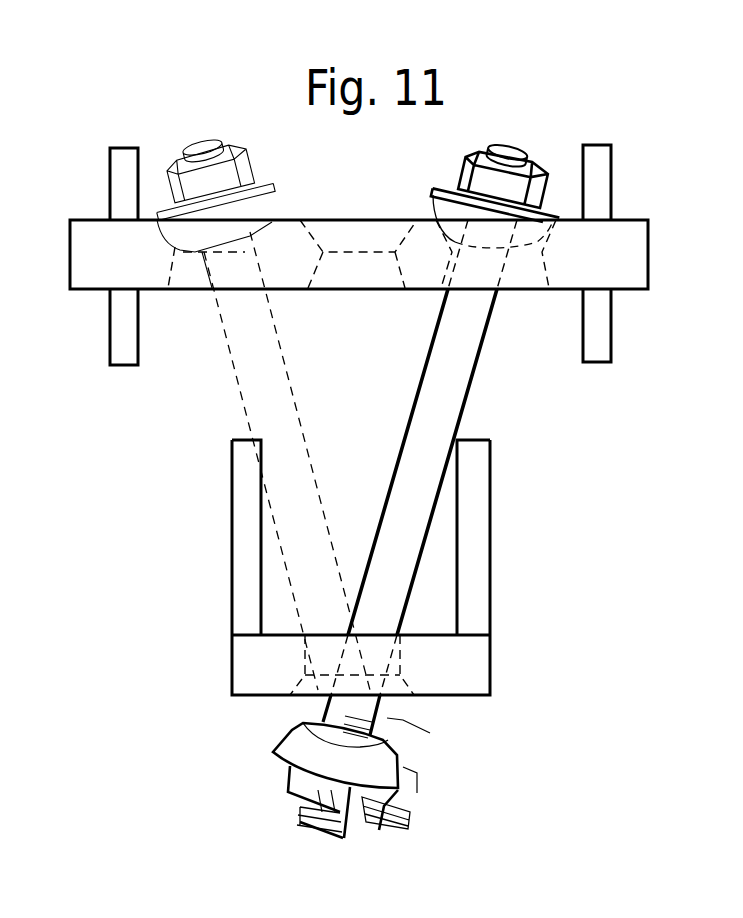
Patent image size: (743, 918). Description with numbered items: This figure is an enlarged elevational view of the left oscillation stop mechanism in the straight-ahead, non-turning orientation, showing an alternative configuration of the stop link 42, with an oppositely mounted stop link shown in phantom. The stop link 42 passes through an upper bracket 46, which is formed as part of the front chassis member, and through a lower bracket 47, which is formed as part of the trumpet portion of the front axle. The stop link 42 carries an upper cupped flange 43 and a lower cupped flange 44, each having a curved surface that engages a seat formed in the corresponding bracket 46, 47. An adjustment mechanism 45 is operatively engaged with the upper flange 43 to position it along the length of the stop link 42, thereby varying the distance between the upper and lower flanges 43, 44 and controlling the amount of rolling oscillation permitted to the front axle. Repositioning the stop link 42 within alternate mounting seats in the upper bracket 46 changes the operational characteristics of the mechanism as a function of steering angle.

The stop link 42 is at (418, 406).
The upper cupped flange 43 is at (433, 188).
The lower cupped flange 44 is at (290, 742).
The adjustment mechanism 45 is at (542, 170).
The upper bracket 46 is at (95, 233).
The lower bracket 47 is at (470, 662).